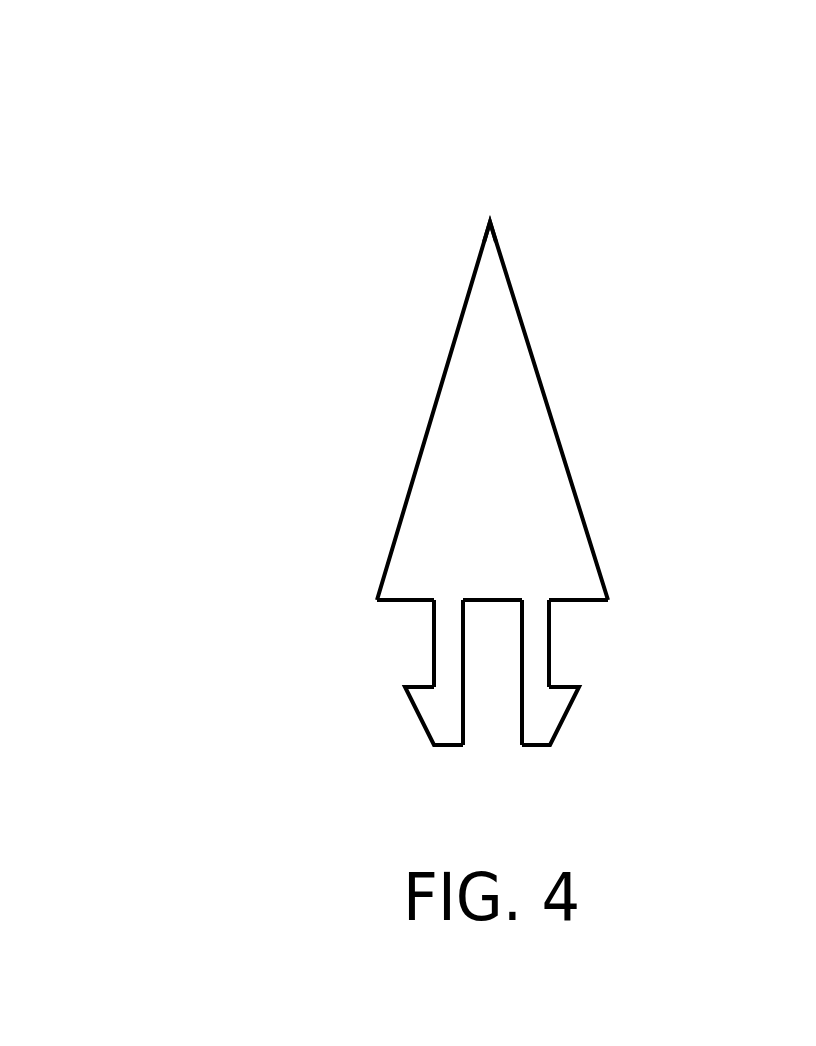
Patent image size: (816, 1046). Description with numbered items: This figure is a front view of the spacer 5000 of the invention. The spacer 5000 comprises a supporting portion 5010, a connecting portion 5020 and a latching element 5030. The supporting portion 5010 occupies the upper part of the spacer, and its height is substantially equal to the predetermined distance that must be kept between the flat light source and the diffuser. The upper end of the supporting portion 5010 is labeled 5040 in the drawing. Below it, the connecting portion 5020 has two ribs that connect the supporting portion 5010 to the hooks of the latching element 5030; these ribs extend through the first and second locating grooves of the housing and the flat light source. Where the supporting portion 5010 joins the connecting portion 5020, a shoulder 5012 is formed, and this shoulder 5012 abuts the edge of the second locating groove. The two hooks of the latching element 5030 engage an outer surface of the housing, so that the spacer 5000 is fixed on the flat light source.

The spacer 5000 is at (188, 59).
The supporting portion 5010 is at (527, 442).
The shoulder 5012 is at (410, 602).
The connecting portion 5020 is at (537, 645).
The latching element 5030 is at (548, 718).
The tip of head portion 5040 is at (490, 222).